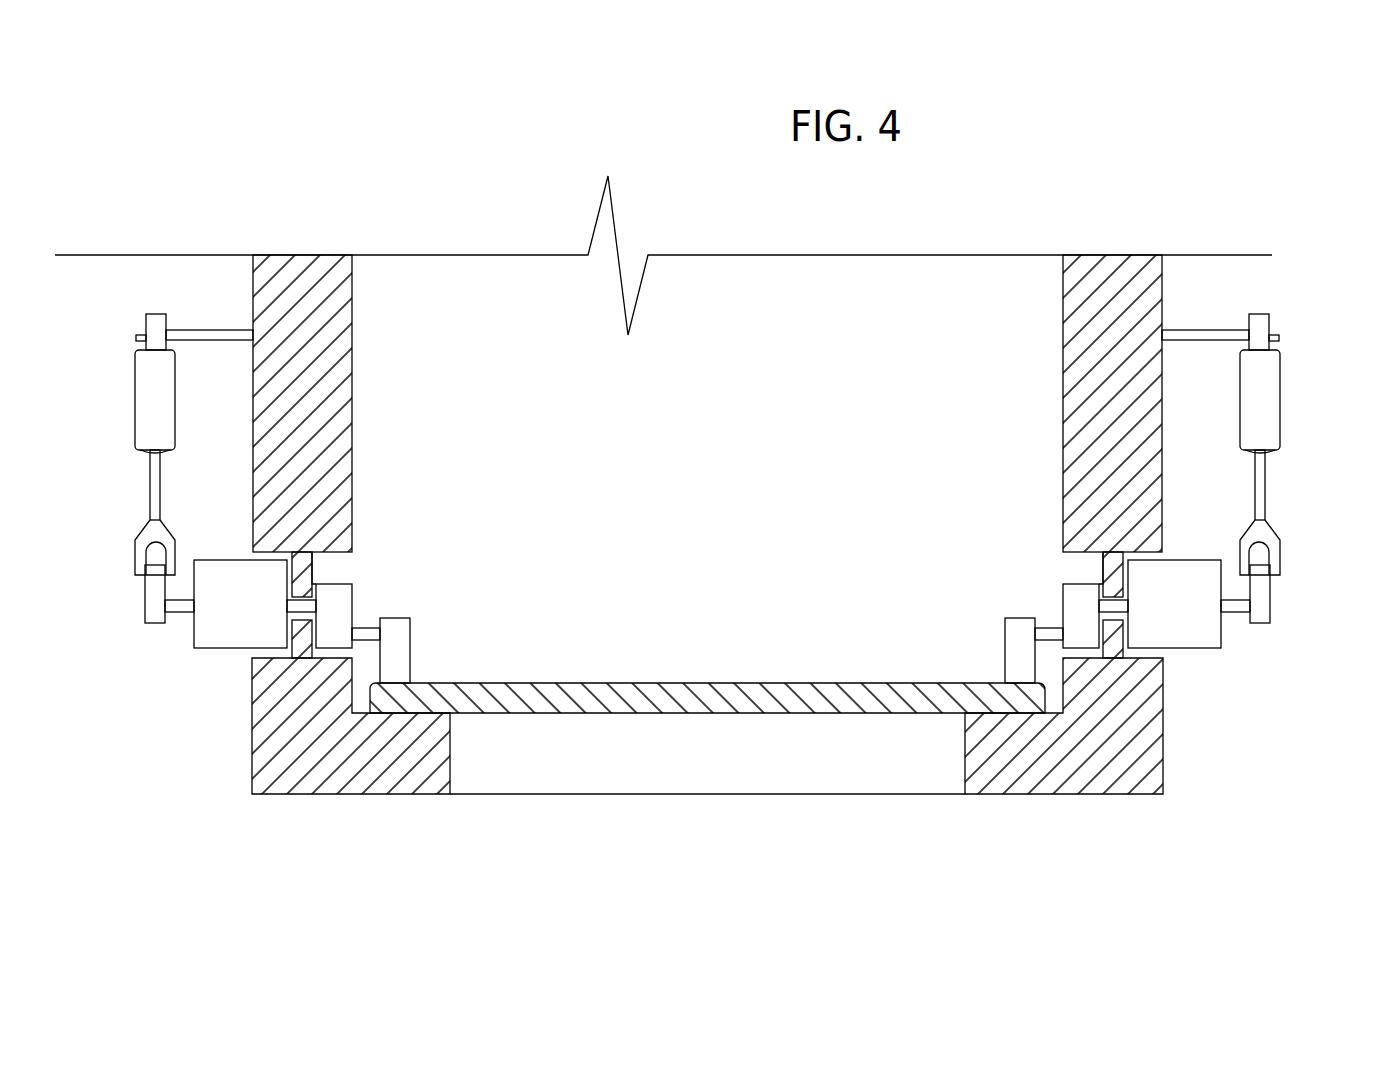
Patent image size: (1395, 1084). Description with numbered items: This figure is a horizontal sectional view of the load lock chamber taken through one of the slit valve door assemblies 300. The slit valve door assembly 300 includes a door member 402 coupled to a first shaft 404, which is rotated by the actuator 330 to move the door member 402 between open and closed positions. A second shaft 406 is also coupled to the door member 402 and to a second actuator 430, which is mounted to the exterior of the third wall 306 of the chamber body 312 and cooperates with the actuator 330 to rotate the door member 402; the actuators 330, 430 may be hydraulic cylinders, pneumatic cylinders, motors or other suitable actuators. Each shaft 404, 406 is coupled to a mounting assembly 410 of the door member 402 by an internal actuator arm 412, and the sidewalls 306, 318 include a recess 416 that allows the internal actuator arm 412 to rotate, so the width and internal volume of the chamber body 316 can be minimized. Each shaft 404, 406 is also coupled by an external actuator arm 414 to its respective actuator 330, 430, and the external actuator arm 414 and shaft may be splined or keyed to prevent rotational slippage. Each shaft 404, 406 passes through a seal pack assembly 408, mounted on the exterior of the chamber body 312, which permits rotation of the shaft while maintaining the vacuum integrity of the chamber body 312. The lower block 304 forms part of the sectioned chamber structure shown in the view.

The slit valve door assembly 300 is at (1020, 600).
The base block 304 is at (1010, 778).
The third wall 306 is at (345, 293).
The chamber body 312 is at (248, 723).
The chamber body 316 is at (527, 773).
The sidewall 318 is at (1138, 289).
The actuator 330 is at (1263, 387).
The door member 402 is at (635, 683).
The first shaft 404 is at (1063, 610).
The second shaft 406 is at (301, 596).
The seal pack assembly 408 is at (200, 632).
The mounting assembly 410 is at (417, 640).
The internal actuator arm 412 is at (335, 607).
The external actuator arm 414 is at (148, 597).
The recess 416 is at (330, 575).
The second actuator 430 is at (147, 400).